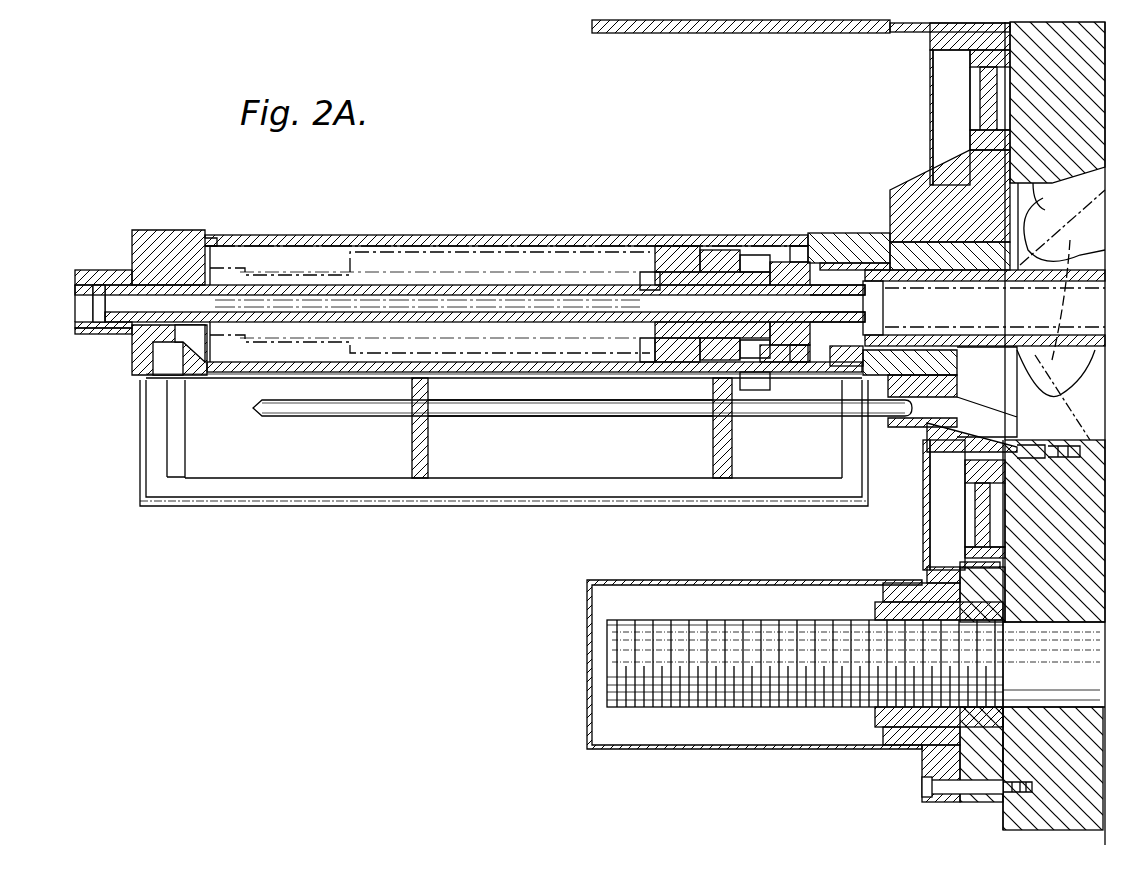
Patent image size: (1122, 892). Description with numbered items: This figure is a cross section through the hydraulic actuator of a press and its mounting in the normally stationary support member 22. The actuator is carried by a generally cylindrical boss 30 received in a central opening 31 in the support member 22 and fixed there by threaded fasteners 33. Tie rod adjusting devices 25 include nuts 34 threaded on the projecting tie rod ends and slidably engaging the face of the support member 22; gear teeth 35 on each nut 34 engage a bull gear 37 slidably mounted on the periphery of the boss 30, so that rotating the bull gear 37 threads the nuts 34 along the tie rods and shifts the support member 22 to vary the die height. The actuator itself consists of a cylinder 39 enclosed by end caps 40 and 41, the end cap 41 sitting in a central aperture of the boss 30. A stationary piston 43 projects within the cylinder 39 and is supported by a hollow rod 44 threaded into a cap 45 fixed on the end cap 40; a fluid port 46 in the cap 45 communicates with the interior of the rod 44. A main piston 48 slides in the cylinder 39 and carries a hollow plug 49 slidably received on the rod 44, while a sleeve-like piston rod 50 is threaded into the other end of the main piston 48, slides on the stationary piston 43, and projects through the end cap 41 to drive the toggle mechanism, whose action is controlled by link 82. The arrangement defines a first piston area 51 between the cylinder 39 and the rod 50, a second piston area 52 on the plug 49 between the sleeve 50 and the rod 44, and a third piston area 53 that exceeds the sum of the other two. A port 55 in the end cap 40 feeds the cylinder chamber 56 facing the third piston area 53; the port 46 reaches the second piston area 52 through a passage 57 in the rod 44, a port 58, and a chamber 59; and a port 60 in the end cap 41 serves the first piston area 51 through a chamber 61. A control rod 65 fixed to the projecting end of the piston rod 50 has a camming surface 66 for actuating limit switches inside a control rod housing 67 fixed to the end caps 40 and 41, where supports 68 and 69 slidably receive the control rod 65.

The support member 22 is at (1010, 822).
The tie rod adjusting devices 25 is at (650, 35).
The boss 30 is at (915, 207).
The central opening 31 is at (1035, 200).
The threaded fasteners 33 is at (1022, 448).
The nuts 34 is at (975, 43).
The gear teeth 35 is at (968, 788).
The bull gear 37 is at (990, 118).
The cylinder 39 is at (462, 240).
The end cap 40 is at (182, 240).
The end cap 41 is at (862, 224).
The stationary piston 43 is at (782, 280).
The hollow rod 44 is at (387, 290).
The cap 45 is at (120, 272).
The fluid port 46 is at (80, 300).
The main piston 48 is at (665, 248).
The hollow plug 49 is at (652, 286).
The piston rod 50 is at (798, 275).
The first piston area 51 is at (767, 245).
The second piston area 52 is at (710, 268).
The third piston area 53 is at (640, 349).
The port 55 is at (165, 368).
The cylinder chamber 56 is at (502, 250).
The passage 57 is at (449, 300).
The port 58 is at (745, 297).
The chamber 59 is at (730, 283).
The port 60 is at (850, 336).
The chamber 61 is at (781, 360).
The control rod 65 is at (476, 416).
The camming surface 66 is at (256, 409).
The control rod housing 67 is at (395, 507).
The support 68 is at (412, 440).
The support 69 is at (713, 443).
The link 82 is at (985, 300).